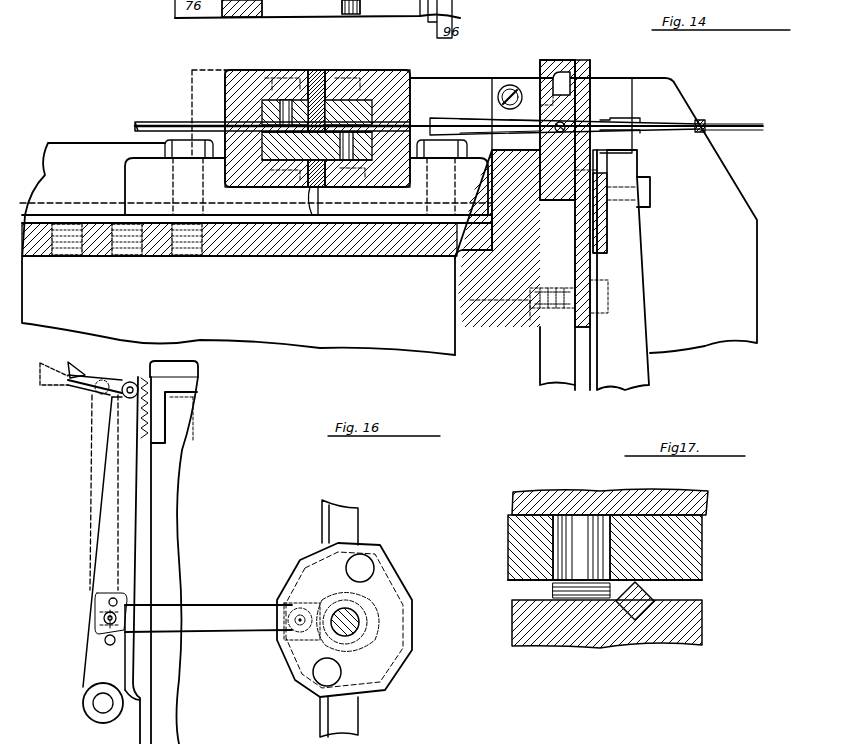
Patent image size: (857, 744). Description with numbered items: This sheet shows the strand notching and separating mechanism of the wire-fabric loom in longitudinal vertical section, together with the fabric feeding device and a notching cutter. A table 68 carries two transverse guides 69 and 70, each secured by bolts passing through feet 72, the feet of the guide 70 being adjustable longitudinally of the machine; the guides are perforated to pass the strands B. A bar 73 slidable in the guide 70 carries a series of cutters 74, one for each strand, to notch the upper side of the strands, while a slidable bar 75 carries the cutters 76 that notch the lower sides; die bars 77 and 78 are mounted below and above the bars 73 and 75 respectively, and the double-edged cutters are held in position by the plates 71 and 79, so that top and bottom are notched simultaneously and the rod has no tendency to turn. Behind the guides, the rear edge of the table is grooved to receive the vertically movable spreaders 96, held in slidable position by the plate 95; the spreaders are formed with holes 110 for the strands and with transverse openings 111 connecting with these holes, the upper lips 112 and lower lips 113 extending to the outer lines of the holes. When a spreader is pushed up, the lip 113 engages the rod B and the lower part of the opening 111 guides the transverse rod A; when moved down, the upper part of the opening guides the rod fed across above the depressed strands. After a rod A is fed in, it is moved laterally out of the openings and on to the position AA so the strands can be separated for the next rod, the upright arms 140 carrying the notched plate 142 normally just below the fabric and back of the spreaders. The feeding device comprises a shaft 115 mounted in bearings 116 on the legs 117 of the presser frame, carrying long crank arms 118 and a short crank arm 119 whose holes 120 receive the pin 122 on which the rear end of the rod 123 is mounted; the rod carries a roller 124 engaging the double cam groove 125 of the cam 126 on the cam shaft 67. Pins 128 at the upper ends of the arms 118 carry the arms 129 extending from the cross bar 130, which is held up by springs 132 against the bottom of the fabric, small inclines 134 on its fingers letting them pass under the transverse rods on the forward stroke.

In FIG. 14, the table 68 is at (264, 256).
In FIG. 14, the transverse guide 69 is at (392, 70).
In FIG. 14, the transverse guide 70 is at (250, 70).
In FIG. 17, the transverse guide 70 is at (573, 498).
In FIG. 14, the plate 71 is at (316, 72).
In FIG. 14, the feet 72 is at (306, 142).
In FIG. 14, the bar 73 is at (262, 108).
In FIG. 17, the bar 73 is at (513, 555).
In FIG. 14, the cutters 74 is at (287, 100).
In FIG. 17, the cutters 74 is at (581, 556).
In FIG. 14, the slidable bar 75 is at (336, 167).
In FIG. 14, the cutters 76 is at (346, 167).
In FIG. 14, the die bar 77 is at (262, 148).
In FIG. 17, the die bar 77 is at (530, 620).
In FIG. 14, the die bar 78 is at (372, 106).
In FIG. 14, the plate 79 is at (308, 208).
In FIG. 14, the vertical plate 95 is at (568, 225).
In FIG. 14, the spreaders 96 is at (575, 320).
In FIG. 14, the holes 110 is at (545, 106).
In FIG. 14, the transverse openings 111 is at (580, 78).
In FIG. 14, the upper lips 112 is at (572, 92).
In FIG. 14, the lower lips 113 is at (610, 118).
In FIG. 14, the upright arms 140 is at (595, 270).
In FIG. 14, the notched plate 142 is at (605, 232).
In FIG. 14, the transverse rod A is at (585, 112).
In FIG. 14, the position AA is at (705, 124).
In FIG. 14, the strands B is at (152, 122).
In FIG. 17, the strands B is at (645, 606).
In FIG. 16, the shaft 115 is at (100, 705).
In FIG. 16, the bearings 116 is at (128, 705).
In FIG. 16, the legs 117 is at (165, 560).
In FIG. 16, the long crank arms 118 is at (108, 550).
In FIG. 16, the short crank arm 119 is at (98, 658).
In FIG. 16, the holes 120 is at (108, 640).
In FIG. 16, the pin 122 is at (112, 618).
In FIG. 16, the rod 123 is at (208, 618).
In FIG. 16, the roller 124 is at (290, 640).
In FIG. 16, the double cam groove 125 is at (312, 578).
In FIG. 16, the cam 126 is at (403, 575).
In FIG. 16, the cam shaft 67 is at (355, 622).
In FIG. 16, the pins 128 is at (130, 381).
In FIG. 16, the arms 129 is at (90, 385).
In FIG. 16, the cross bar 130 is at (70, 380).
In FIG. 16, the springs 132 is at (150, 413).
In FIG. 16, the inclines 134 is at (80, 368).